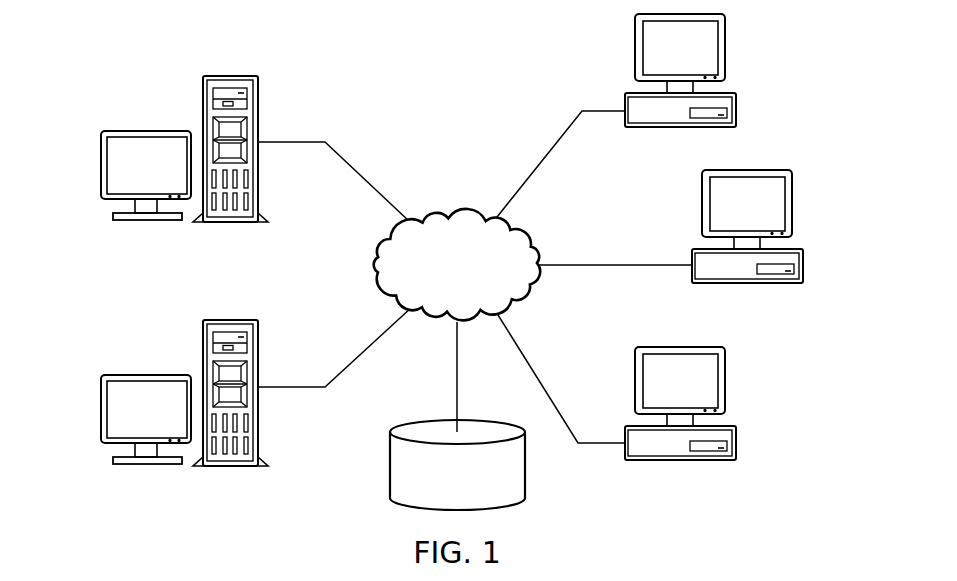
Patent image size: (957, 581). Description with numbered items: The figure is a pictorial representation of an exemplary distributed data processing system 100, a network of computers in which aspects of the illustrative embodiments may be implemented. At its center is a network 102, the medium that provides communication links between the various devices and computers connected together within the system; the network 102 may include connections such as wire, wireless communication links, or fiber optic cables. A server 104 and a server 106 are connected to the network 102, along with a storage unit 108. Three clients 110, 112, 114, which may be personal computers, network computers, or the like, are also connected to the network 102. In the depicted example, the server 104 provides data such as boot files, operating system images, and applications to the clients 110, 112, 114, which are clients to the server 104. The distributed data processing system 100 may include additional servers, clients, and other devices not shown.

The distributed data processing system 100 is at (332, 60).
The network 102 is at (432, 213).
The server 104 is at (101, 165).
The server 106 is at (101, 410).
The storage unit 108 is at (390, 465).
The client 110 is at (738, 102).
The client 112 is at (804, 271).
The client 114 is at (737, 450).